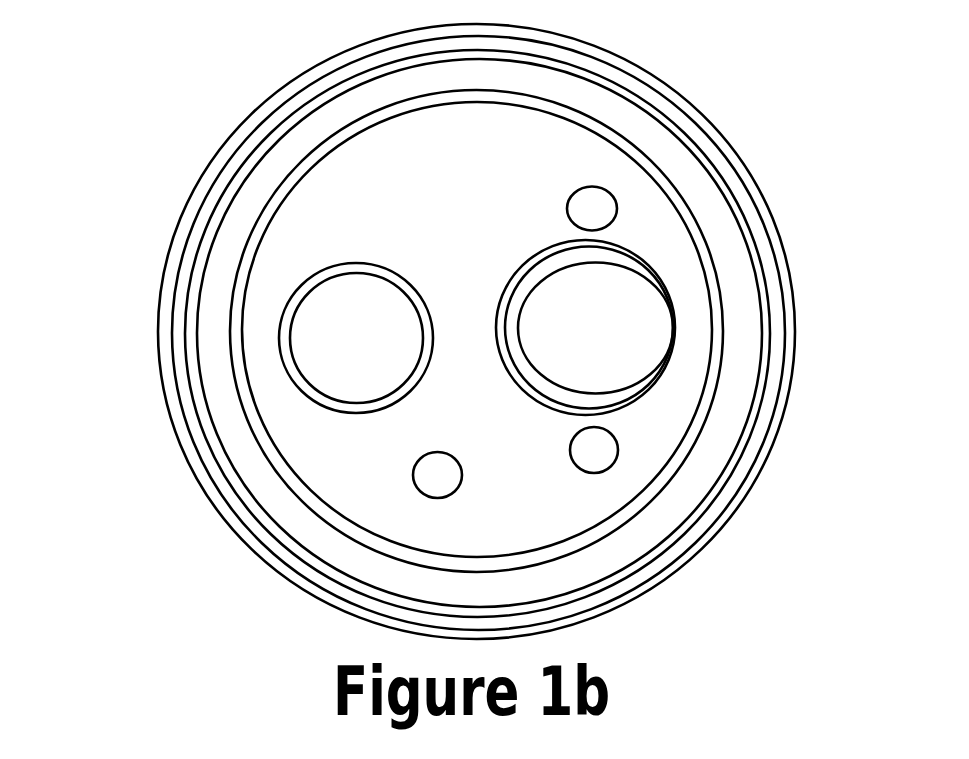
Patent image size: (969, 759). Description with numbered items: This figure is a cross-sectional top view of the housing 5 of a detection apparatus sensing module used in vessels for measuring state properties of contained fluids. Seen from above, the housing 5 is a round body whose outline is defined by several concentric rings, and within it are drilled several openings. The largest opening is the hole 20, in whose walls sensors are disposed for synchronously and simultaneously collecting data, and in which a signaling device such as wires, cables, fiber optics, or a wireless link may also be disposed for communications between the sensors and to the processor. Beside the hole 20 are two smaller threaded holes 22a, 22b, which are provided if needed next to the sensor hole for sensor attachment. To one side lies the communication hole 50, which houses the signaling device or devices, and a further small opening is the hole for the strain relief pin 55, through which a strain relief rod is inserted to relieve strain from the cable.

The housing 5 is at (131, 326).
The hole 20 is at (615, 348).
The threaded hole 22a is at (595, 208).
The threaded hole 22b is at (595, 452).
The communication hole 50 is at (357, 343).
The hole for the strain relief pin 55 is at (437, 475).